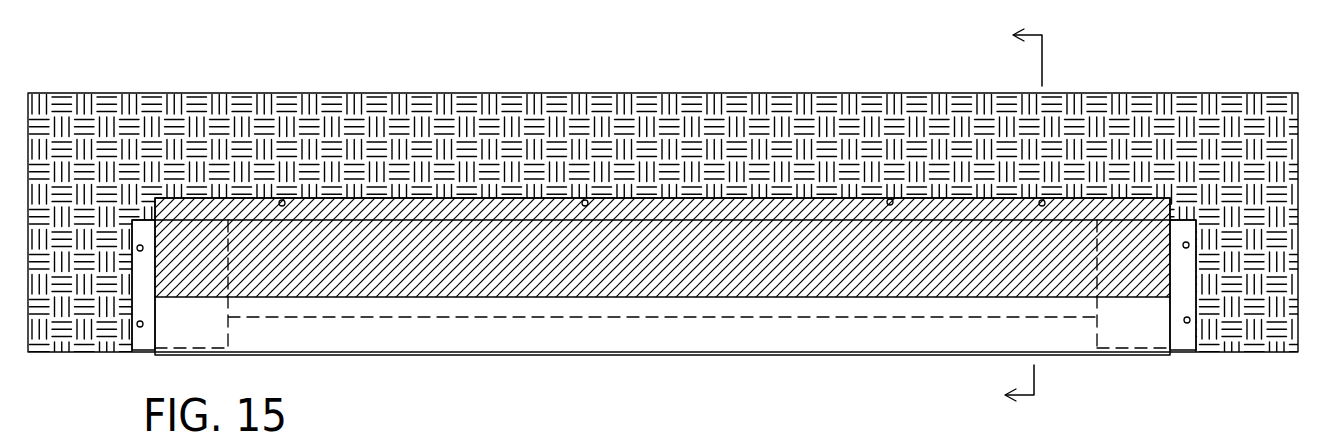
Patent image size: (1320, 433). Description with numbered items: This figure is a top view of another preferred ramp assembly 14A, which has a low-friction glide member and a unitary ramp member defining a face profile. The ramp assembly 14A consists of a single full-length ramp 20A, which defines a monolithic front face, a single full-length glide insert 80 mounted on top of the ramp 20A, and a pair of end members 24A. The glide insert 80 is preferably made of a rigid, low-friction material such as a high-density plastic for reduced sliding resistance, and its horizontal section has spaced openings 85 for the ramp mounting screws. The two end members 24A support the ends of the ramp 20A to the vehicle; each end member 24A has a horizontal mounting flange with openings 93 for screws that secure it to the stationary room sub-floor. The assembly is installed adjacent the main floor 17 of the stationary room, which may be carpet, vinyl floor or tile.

The ramp assembly 14A is at (525, 386).
The main floor 17 is at (579, 103).
The ramp 20A is at (693, 342).
The end member 24A is at (146, 343).
The glide insert 80 is at (890, 276).
The spaced openings 85 is at (283, 200).
The openings 93 is at (143, 251).